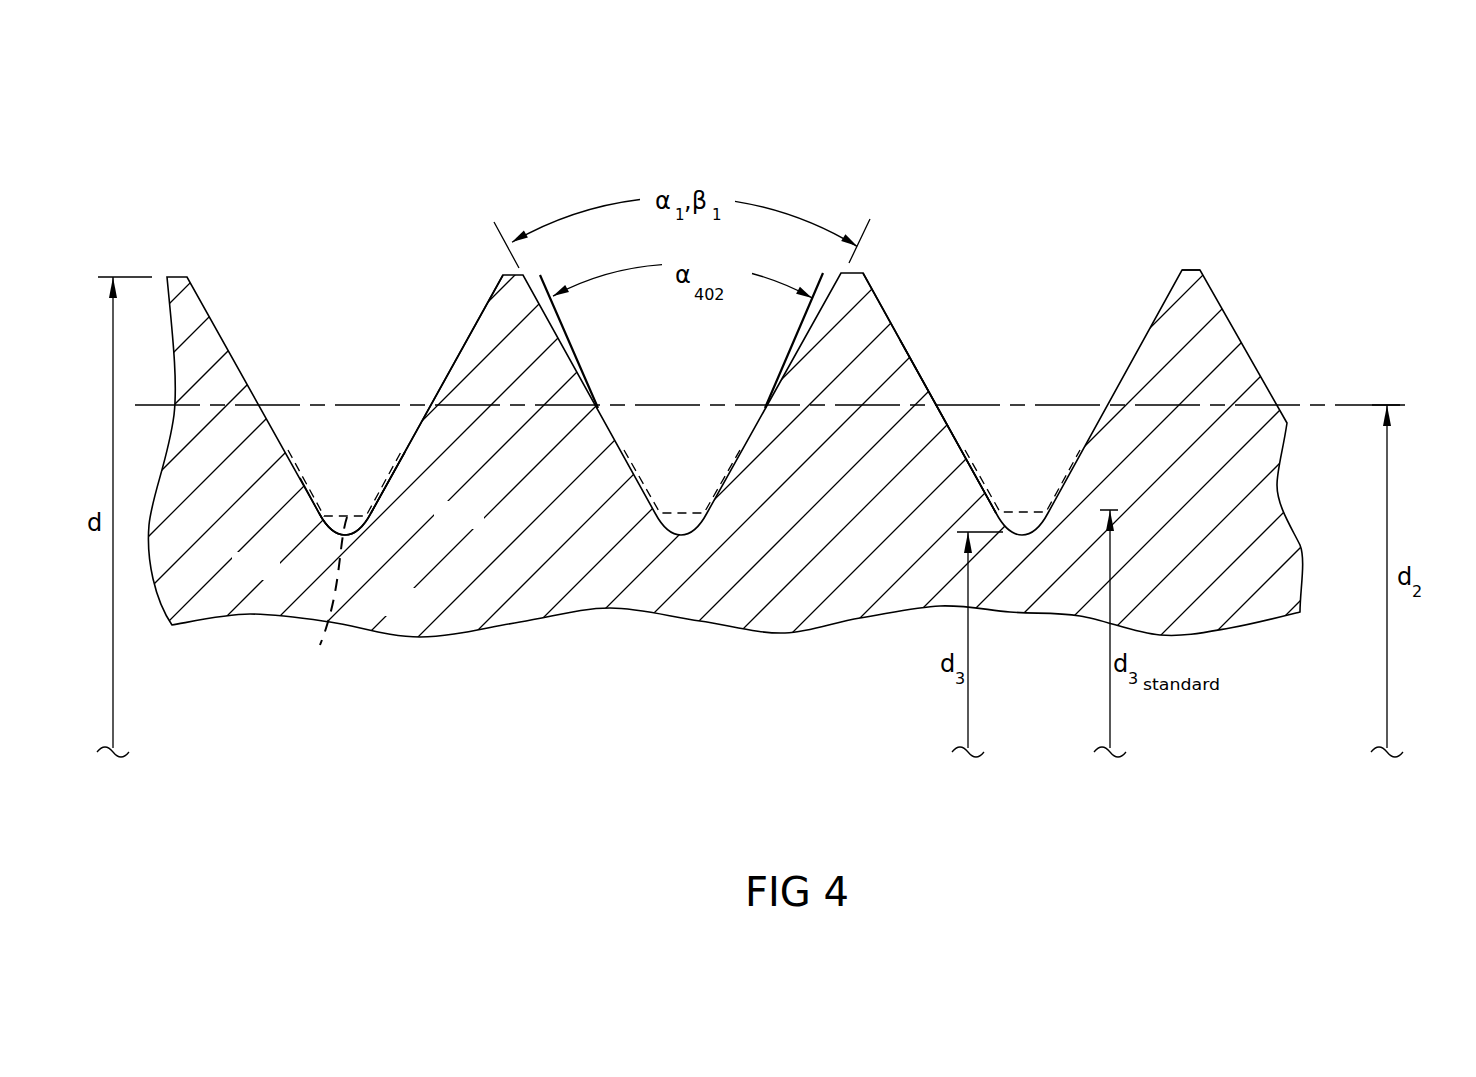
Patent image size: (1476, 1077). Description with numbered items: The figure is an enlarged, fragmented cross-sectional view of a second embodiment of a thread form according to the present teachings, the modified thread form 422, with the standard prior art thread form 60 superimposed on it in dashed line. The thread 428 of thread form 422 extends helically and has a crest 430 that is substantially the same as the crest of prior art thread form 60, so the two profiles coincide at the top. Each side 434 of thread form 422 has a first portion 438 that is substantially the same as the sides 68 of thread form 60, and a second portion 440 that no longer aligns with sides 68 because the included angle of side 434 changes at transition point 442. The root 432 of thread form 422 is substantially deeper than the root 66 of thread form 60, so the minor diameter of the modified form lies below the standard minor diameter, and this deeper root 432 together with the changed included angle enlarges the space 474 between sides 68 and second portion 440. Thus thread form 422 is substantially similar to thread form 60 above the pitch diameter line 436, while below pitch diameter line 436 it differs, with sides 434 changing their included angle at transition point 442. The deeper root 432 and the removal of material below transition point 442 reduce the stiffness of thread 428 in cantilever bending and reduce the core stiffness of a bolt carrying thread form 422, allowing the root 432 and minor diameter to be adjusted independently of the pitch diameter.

The modified thread form 422 is at (235, 136).
The prior art thread form 60 is at (355, 110).
The thread 428 is at (472, 330).
The sides 68 is at (305, 480).
The space 474 is at (305, 497).
The second portion 440 is at (402, 462).
The root 432 is at (350, 538).
The root 66 is at (320, 595).
The sides 434 is at (884, 312).
The first portions 438 is at (927, 382).
The transition point 442 is at (952, 427).
The crest 430 is at (1241, 230).
The pitch diameter line 436 is at (797, 364).